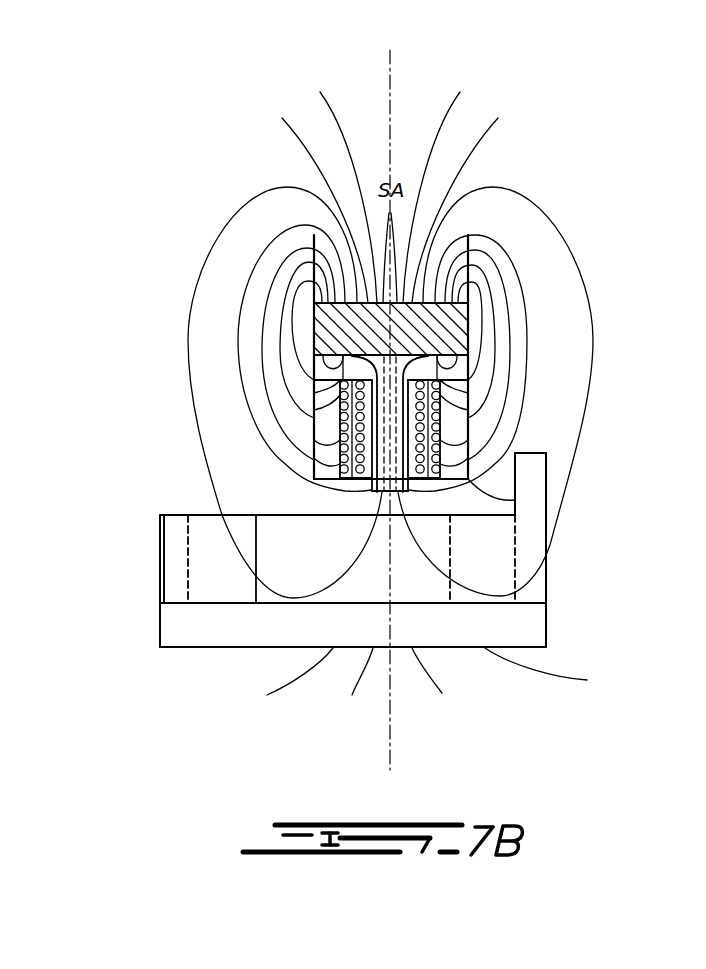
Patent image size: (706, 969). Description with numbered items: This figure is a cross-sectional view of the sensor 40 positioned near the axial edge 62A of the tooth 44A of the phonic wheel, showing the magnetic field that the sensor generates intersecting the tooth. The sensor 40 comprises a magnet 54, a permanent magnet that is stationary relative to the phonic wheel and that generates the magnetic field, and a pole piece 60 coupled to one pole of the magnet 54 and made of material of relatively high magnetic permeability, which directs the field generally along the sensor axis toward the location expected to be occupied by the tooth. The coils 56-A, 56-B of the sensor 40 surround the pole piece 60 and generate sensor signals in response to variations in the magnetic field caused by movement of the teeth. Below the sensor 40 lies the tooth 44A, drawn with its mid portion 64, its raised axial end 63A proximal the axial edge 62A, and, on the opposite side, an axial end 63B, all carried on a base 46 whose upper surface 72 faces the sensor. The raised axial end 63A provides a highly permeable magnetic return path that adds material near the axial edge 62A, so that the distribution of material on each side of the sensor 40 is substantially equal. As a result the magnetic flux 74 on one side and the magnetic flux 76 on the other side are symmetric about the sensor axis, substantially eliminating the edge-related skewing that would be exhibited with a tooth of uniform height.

The sensor 40 is at (172, 247).
The magnet 54 is at (323, 323).
The pole piece 60 is at (325, 366).
The coil 56-A is at (353, 407).
The coil 56-B is at (343, 468).
The magnetic flux 74 is at (217, 493).
The magnetic flux 76 is at (598, 432).
The tooth 44A is at (130, 535).
The left side wall portion 63B is at (177, 569).
The base plate 46 is at (220, 627).
The mid portion 64 is at (290, 575).
The raised axial end 63A is at (527, 463).
The upper surface of yoke base 72 is at (497, 505).
The axial edge 62A is at (547, 555).